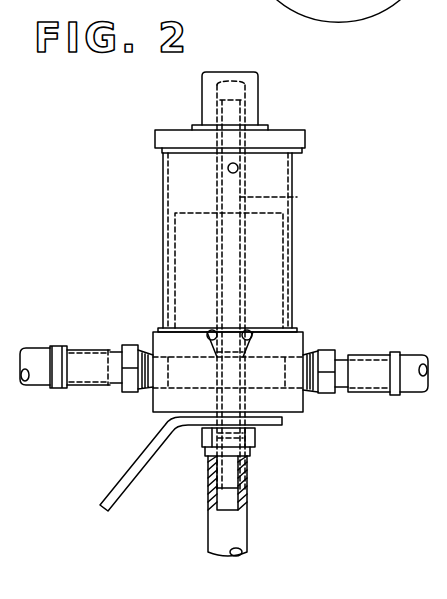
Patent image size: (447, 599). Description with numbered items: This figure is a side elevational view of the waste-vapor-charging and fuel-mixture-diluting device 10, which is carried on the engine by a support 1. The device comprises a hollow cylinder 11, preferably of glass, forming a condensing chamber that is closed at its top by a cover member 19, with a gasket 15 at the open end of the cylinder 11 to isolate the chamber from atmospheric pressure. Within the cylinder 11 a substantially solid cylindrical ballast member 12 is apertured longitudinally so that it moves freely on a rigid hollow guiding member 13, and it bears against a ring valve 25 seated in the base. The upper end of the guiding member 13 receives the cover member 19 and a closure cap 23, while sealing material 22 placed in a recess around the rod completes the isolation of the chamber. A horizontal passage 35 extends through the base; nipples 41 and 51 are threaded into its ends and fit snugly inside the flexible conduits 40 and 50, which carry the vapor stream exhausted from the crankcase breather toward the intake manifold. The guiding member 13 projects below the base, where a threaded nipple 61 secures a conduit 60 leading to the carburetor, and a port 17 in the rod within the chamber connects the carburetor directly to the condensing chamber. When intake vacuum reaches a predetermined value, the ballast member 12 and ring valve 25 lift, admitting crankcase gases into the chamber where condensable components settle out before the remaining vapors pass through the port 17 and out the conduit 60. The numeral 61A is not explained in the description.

The support 1 is at (127, 468).
The waste-vapor-charging and fuel-mixture-diluting device 10 is at (276, 122).
The hollow cylinder 11 is at (163, 180).
The ballast member 12 is at (180, 262).
The guiding member 13 is at (297, 197).
The gasket 15 is at (163, 151).
The port 17 is at (238, 168).
The cover member 19 is at (297, 142).
The sealing material 22 is at (200, 125).
The closure cap 23 is at (208, 85).
The ring valve 25 is at (260, 333).
The horizontal passage 35 is at (192, 373).
The conduit 40 is at (418, 357).
The nipple 41 is at (330, 350).
The conduit 50 is at (30, 349).
The nipple 51 is at (133, 345).
The conduit 60 is at (215, 527).
The threaded nipple 61 is at (250, 437).
The drain nut 61A is at (432, 17).